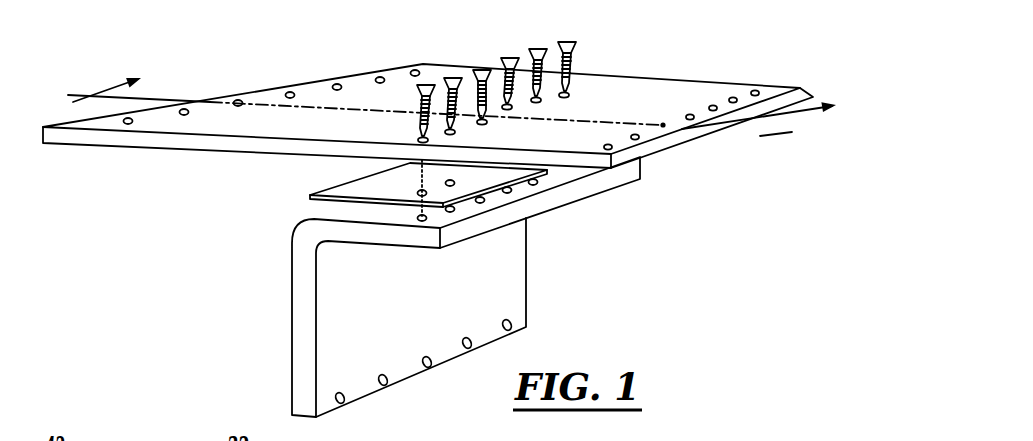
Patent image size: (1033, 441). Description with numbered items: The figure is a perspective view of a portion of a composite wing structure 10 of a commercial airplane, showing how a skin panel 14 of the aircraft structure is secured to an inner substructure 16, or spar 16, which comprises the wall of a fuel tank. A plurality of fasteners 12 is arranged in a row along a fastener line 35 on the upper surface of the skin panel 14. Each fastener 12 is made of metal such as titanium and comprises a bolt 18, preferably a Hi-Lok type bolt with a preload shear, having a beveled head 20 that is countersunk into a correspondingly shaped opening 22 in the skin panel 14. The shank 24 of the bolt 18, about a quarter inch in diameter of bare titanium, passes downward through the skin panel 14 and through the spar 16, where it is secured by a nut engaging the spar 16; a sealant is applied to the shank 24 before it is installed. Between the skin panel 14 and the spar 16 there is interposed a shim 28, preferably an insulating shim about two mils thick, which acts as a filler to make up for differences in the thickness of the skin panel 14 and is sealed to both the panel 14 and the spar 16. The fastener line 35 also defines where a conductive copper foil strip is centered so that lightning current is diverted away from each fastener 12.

The wing structure 10 is at (751, 60).
The fastener 12 is at (567, 40).
The skin panel 14 is at (103, 143).
The inner substructure 16 is at (300, 266).
The bolt 18 is at (511, 56).
The beveled head 20 is at (412, 102).
The opening 22 is at (538, 104).
The shank 24 is at (400, 118).
The shim 28 is at (482, 177).
The fastener line 35 is at (604, 56).